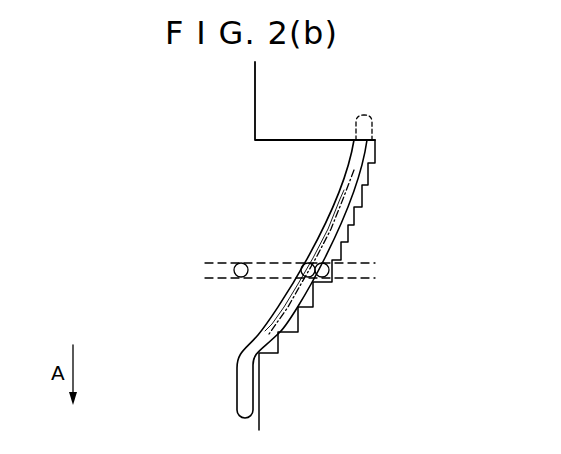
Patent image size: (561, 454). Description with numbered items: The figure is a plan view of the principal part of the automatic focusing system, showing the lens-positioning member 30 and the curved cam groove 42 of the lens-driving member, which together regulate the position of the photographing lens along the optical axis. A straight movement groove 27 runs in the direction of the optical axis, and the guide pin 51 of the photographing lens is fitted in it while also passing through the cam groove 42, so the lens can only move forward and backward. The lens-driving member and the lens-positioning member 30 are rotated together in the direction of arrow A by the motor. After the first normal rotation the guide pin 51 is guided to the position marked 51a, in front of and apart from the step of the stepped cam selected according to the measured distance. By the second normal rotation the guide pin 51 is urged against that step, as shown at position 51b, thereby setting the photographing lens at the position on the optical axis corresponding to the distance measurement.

The lens-positioning member 30 is at (255, 93).
The cam groove 42 is at (356, 118).
The straight movement groove 27 is at (214, 278).
The guide pin 51 is at (240, 263).
The guide pin position 51a is at (301, 263).
The guide pin position 51b is at (329, 275).